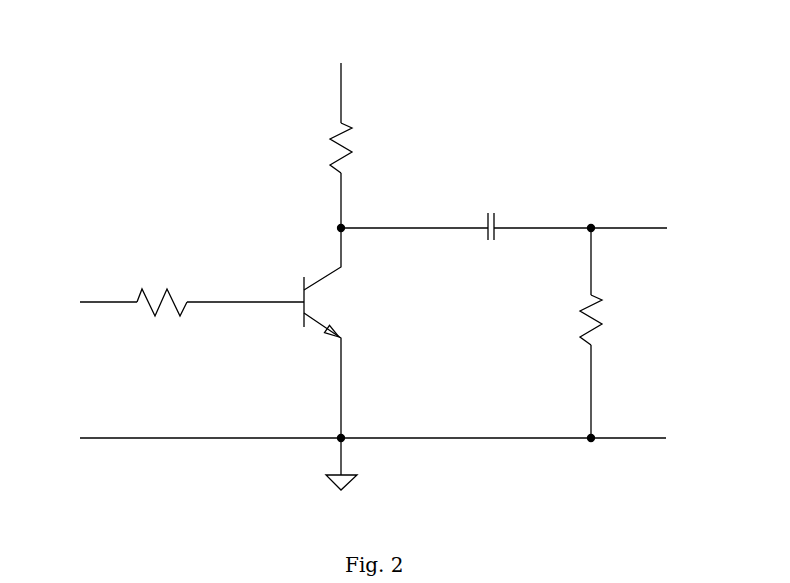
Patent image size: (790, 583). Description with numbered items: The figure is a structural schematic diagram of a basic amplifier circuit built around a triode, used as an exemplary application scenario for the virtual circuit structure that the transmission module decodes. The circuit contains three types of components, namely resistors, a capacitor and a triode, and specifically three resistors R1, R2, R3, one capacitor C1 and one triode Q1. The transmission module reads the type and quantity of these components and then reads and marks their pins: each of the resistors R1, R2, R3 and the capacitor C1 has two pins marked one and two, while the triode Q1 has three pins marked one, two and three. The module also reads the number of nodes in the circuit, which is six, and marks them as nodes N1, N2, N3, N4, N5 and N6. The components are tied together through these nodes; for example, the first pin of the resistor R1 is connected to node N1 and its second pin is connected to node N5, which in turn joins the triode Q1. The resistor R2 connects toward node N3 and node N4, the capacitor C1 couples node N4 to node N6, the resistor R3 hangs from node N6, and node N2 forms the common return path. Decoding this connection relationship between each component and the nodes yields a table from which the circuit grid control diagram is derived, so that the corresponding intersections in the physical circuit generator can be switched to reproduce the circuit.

The node N1 is at (89, 303).
The node N2 is at (354, 462).
The node N3 is at (339, 83).
The node N4 is at (396, 206).
The node N5 is at (245, 316).
The node N6 is at (597, 252).
The resistor R1 is at (164, 294).
The resistor R2 is at (357, 151).
The resistor R3 is at (607, 351).
The capacitor C1 is at (488, 220).
The triode Q1 is at (317, 333).